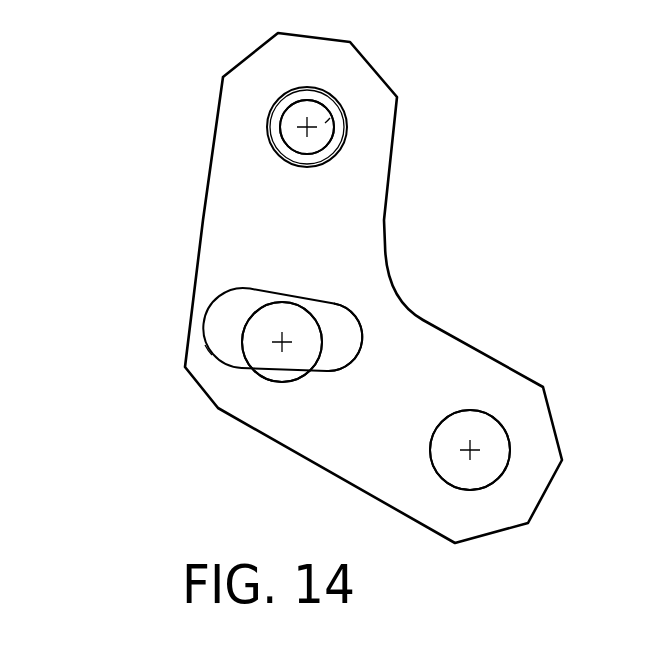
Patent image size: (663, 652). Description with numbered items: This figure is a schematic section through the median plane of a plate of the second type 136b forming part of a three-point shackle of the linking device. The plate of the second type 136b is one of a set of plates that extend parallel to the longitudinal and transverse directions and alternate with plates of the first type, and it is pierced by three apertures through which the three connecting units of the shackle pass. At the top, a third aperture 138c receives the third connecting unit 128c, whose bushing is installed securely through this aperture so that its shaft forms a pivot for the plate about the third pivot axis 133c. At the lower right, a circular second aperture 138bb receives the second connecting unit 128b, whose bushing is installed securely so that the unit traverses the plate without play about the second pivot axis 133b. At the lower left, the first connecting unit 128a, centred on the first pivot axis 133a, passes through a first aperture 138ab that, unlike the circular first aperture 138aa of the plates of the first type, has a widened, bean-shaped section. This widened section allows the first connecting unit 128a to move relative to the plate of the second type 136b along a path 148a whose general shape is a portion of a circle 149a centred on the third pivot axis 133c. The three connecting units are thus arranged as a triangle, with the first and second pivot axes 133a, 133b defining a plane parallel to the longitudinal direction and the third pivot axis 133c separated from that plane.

The plate of the second type 136b is at (478, 348).
The third pivot axis 133c is at (305, 125).
The third aperture 138c is at (332, 128).
The third connecting unit 128c is at (317, 140).
The first pivot axis 133a is at (235, 330).
The path 148a is at (215, 328).
The first connecting unit 128a is at (302, 322).
The first aperture of plate of the second type 138ab is at (210, 345).
The first aperture of plate of the first type 138aa is at (266, 366).
The portion of a circle 149a is at (340, 338).
The second pivot axis 133b is at (472, 455).
The second connecting unit 128b is at (485, 437).
The second aperture of plate of the second type 138bb is at (467, 490).